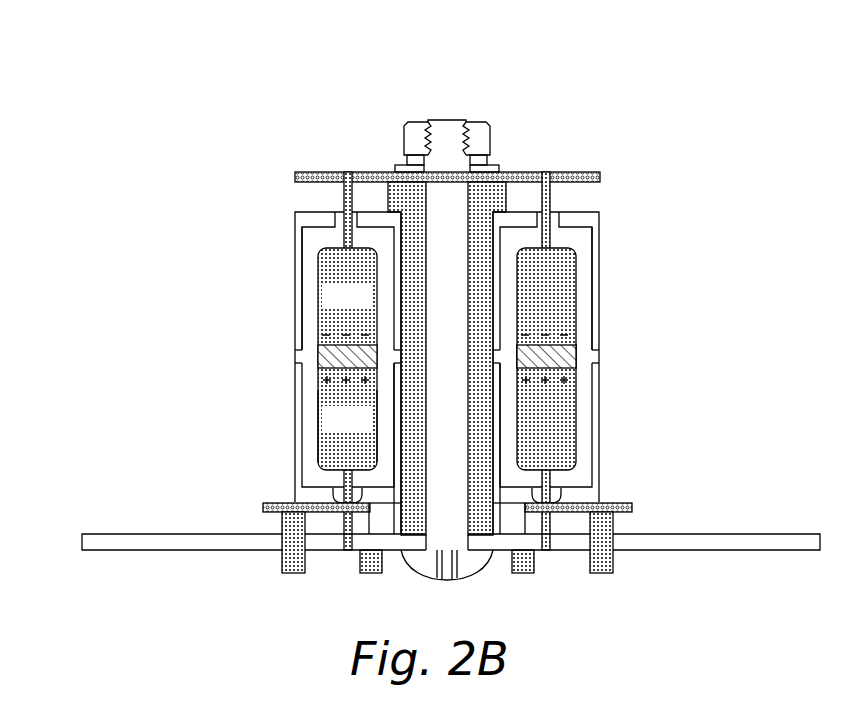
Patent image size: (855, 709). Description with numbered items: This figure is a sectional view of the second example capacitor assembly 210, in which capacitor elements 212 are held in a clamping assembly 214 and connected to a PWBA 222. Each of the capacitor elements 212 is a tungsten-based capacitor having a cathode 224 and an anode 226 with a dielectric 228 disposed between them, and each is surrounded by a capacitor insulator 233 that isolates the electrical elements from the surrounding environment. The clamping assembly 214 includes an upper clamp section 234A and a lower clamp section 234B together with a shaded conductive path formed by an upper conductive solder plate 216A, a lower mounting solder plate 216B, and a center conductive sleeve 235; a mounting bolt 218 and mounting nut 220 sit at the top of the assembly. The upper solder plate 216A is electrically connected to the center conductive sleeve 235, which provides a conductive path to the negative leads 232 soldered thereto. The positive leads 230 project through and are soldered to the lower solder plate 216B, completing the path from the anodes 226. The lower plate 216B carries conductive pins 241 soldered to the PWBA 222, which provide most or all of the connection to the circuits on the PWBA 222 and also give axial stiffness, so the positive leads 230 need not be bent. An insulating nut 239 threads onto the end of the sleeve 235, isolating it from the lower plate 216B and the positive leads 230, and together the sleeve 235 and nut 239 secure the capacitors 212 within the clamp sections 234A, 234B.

The capacitor assembly 210 is at (644, 104).
The capacitor elements 212 is at (592, 322).
The clamping assembly 214 is at (612, 206).
The upper conductive solder plate 216A is at (292, 166).
The lower mounting solder plate 216B is at (652, 512).
The mounting bolt 218 is at (447, 130).
The mounting nut 220 is at (412, 138).
The PWBA 222 is at (92, 542).
The cathode 224 is at (367, 305).
The anode 226 is at (367, 430).
The dielectric 228 is at (336, 358).
The positive leads 230 is at (337, 500).
The negative leads 232 is at (348, 172).
The capacitor insulator 233 is at (317, 239).
The upper clamp section 234A is at (285, 206).
The lower clamp section 234B is at (622, 491).
The center conductive sleeve 235 is at (488, 204).
The insulating nut 239 is at (392, 527).
The conductive pins 241 is at (293, 574).